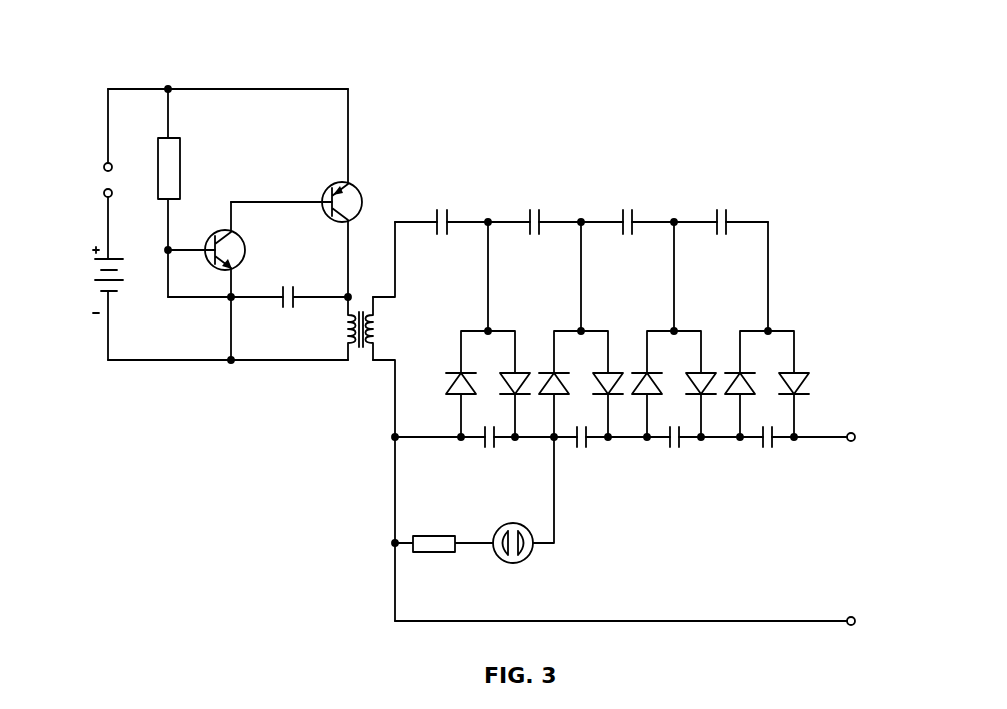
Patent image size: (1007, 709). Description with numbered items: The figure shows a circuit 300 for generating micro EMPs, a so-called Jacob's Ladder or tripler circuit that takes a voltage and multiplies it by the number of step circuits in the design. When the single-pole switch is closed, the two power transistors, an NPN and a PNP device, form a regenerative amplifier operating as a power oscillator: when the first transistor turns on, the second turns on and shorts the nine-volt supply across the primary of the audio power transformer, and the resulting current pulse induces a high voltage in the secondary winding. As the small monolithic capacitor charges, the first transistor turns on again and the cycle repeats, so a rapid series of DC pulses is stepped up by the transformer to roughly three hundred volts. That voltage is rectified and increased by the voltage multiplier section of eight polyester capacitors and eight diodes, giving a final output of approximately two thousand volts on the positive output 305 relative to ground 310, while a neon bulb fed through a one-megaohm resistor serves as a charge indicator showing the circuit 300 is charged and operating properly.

The circuit 300 is at (108, 74).
The positive output 305 is at (855, 434).
The ground 310 is at (855, 618).